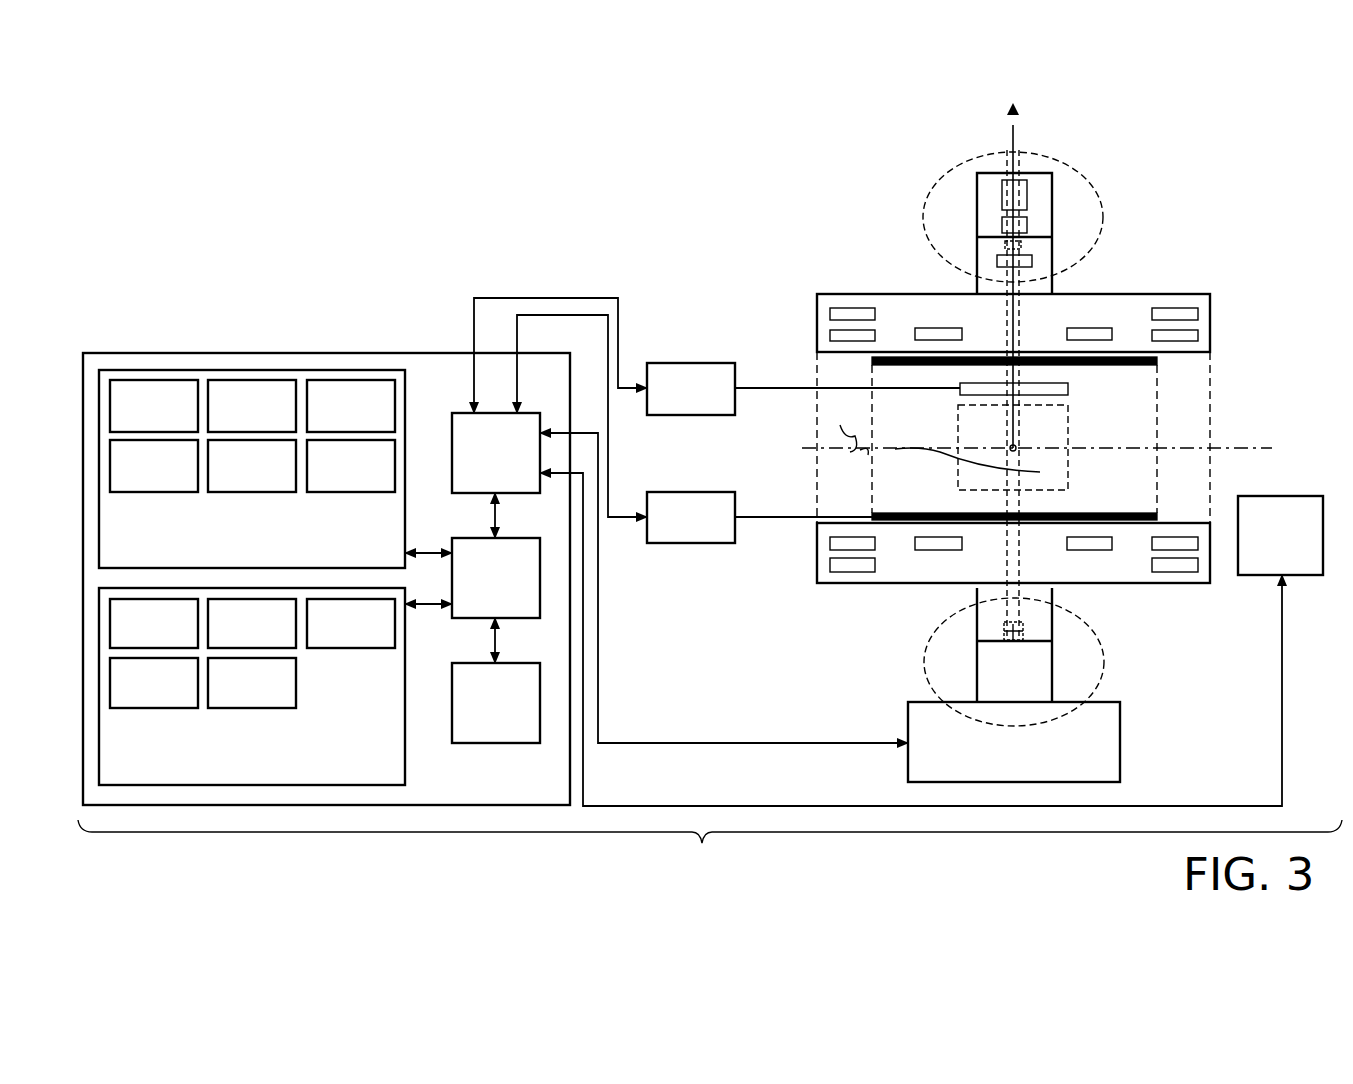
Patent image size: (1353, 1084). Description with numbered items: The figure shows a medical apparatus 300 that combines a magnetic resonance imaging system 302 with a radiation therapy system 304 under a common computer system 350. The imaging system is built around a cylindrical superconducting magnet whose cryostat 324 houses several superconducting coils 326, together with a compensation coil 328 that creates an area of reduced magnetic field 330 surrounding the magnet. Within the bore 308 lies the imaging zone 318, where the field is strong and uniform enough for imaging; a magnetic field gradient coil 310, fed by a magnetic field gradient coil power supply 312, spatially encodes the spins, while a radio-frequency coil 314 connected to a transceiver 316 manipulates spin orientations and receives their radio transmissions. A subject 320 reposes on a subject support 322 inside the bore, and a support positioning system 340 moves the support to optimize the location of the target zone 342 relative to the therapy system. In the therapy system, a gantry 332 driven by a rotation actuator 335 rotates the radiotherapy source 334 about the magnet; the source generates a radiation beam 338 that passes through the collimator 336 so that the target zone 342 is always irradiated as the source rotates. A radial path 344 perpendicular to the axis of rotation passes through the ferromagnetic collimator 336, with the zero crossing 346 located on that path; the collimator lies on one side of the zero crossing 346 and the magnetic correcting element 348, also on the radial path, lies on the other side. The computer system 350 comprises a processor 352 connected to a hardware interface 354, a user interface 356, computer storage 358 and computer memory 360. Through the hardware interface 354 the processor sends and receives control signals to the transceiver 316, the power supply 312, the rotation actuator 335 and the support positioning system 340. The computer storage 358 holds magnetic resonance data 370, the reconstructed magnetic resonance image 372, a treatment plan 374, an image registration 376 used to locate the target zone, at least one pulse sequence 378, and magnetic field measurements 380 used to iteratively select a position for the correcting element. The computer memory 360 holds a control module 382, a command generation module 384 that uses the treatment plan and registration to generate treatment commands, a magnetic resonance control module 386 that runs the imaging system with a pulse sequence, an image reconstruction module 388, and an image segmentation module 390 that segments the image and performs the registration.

The medical apparatus 300 is at (710, 848).
The magnetic resonance imaging system 302 is at (1232, 282).
The radiation therapy system 304 is at (927, 188).
The bore 308 is at (1220, 365).
The magnetic field gradient coil 310 is at (872, 360).
The magnetic field gradient coil power supply 312 is at (671, 532).
The radio-frequency coil 314 is at (1068, 389).
The transceiver 316 is at (671, 403).
The imaging zone 318 is at (1068, 418).
The subject 320 is at (1238, 432).
The subject support 322 is at (802, 481).
The cryostat 324 is at (1140, 293).
The superconducting coils 326 is at (830, 336).
The compensation coil 328 is at (830, 312).
The area of reduced magnetic field 330 is at (1065, 160).
The gantry 332 is at (994, 693).
The radiotherapy source 334 is at (1027, 190).
The rotation actuator 335 is at (994, 772).
The collimator 336 is at (1027, 224).
The radiation beam 338 is at (1013, 506).
The support positioning system 340 is at (1260, 548).
The target zone 342 is at (1011, 445).
The radial path 344 is at (1010, 143).
The zero crossing 346 is at (1005, 246).
The magnetic correcting element 348 is at (997, 261).
The computer system 350 is at (340, 353).
The processor 352 is at (476, 592).
The hardware interface 354 is at (476, 467).
The user interface 356 is at (476, 718).
The computer storage 358 is at (235, 558).
The computer memory 360 is at (235, 772).
The magnetic resonance data 370 is at (232, 478).
The magnetic resonance image 372 is at (331, 478).
The treatment plan 374 is at (134, 418).
The image registration 376 is at (232, 418).
The pulse sequence 378 is at (331, 418).
The magnetic field measurements 380 is at (134, 478).
The control module 382 is at (134, 637).
The command generation module 384 is at (232, 637).
The magnetic resonance control module 386 is at (331, 637).
The image reconstruction module 388 is at (134, 697).
The image segmentation module 390 is at (232, 697).